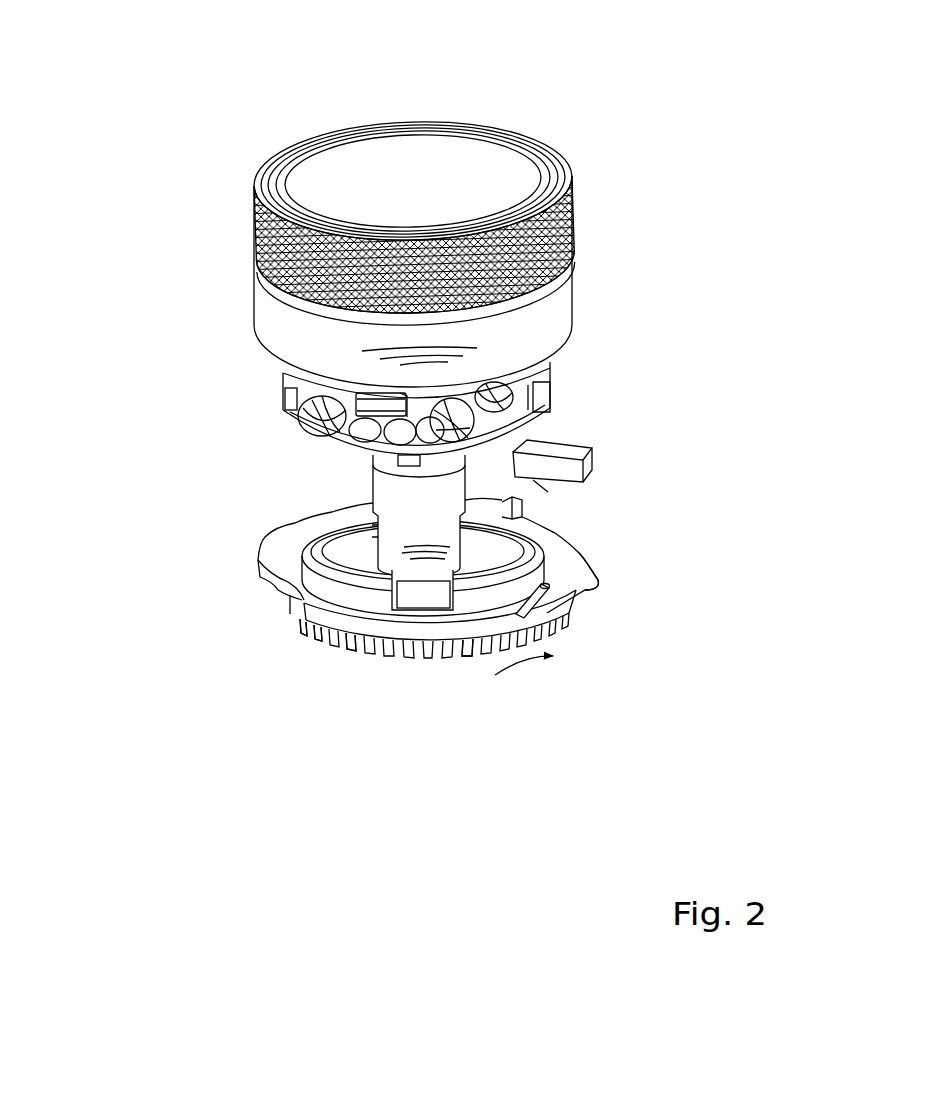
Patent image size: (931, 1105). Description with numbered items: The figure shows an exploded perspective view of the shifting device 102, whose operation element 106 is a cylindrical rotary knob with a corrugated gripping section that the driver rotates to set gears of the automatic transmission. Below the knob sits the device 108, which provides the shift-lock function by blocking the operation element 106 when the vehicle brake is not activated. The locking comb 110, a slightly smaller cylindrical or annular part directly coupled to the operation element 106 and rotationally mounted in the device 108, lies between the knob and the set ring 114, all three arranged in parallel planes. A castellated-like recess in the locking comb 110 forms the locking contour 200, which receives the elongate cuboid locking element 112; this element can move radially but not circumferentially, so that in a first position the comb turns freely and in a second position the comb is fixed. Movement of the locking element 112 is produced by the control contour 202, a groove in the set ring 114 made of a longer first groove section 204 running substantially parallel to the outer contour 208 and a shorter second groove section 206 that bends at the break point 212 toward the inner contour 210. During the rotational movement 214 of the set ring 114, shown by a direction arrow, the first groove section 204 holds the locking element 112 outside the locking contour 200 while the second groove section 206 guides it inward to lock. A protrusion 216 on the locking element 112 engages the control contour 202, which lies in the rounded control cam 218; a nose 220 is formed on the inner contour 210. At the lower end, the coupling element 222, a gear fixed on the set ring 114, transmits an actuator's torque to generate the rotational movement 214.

The shifting device 102 is at (513, 110).
The operation element 106 is at (535, 328).
The device 108 is at (249, 424).
The locking comb 110 is at (270, 392).
The locking element 112 is at (588, 460).
The set ring 114 is at (288, 548).
The locking contour 200 is at (557, 398).
The control contour 202 is at (592, 578).
The first groove section 204 is at (467, 633).
The second groove section 206 is at (585, 580).
The outer contour 208 is at (351, 633).
The inner contour 210 is at (296, 618).
The break point 212 is at (550, 605).
The rotational movement 214 is at (520, 668).
The protrusion 216 is at (548, 492).
The control cam 218 is at (413, 636).
The nose 220 is at (373, 530).
The coupling element 222 is at (318, 628).